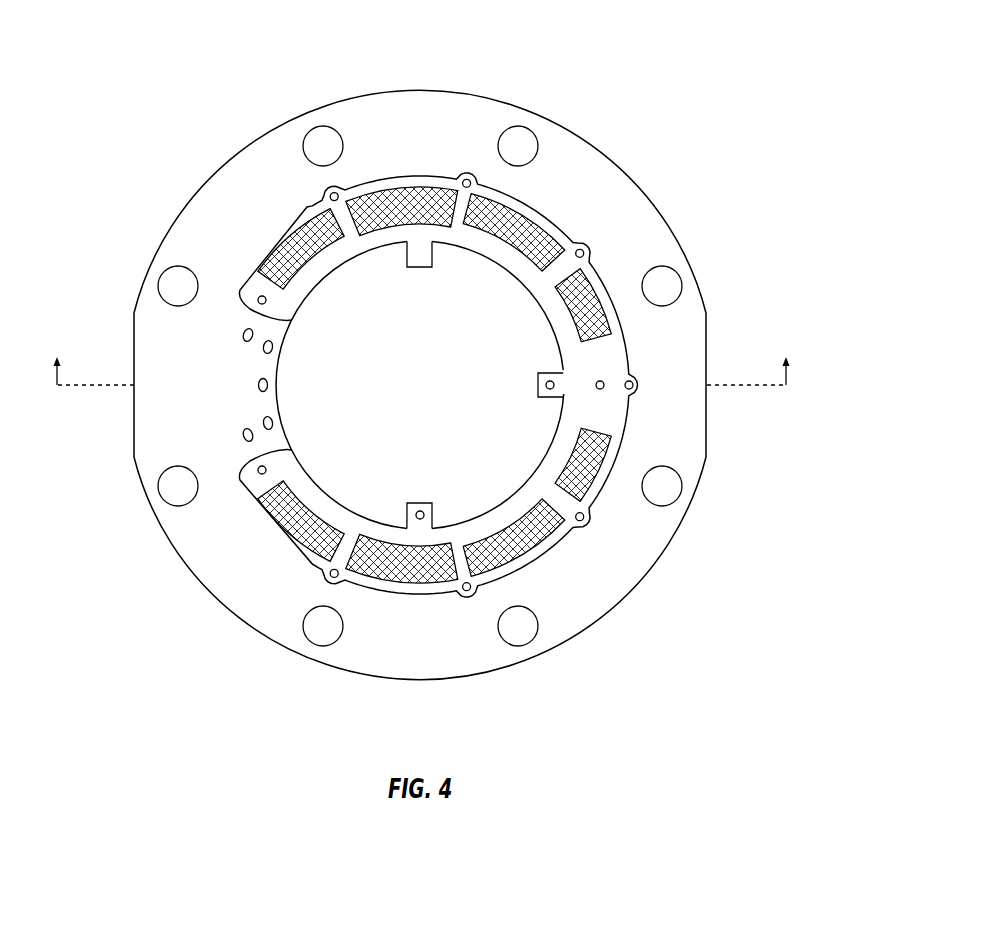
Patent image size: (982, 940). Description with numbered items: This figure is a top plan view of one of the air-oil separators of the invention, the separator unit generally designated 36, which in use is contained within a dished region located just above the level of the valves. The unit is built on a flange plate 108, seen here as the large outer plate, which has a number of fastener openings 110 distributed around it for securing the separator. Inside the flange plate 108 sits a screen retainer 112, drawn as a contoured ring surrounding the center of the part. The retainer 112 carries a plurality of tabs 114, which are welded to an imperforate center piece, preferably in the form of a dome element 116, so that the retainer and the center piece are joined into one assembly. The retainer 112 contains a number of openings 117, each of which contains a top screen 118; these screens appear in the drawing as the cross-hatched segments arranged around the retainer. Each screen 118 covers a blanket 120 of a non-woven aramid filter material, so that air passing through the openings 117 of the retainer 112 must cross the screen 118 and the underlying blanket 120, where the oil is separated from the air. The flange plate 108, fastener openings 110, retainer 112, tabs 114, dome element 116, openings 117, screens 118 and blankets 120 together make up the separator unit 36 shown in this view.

The air-oil separator unit 36 is at (622, 38).
The flange plate 108 is at (393, 115).
The fastener openings 110 is at (538, 145).
The screen retainer 112 is at (500, 515).
The tabs 114 is at (549, 372).
The dome element 116 is at (438, 395).
The openings 117 is at (402, 558).
The top screen 118 is at (382, 562).
The blanket 120 is at (590, 484).